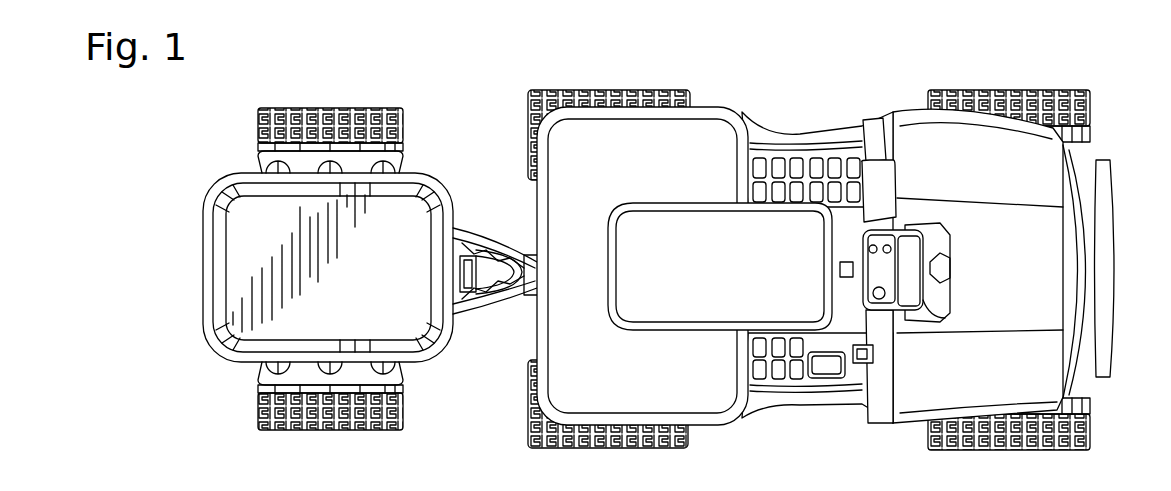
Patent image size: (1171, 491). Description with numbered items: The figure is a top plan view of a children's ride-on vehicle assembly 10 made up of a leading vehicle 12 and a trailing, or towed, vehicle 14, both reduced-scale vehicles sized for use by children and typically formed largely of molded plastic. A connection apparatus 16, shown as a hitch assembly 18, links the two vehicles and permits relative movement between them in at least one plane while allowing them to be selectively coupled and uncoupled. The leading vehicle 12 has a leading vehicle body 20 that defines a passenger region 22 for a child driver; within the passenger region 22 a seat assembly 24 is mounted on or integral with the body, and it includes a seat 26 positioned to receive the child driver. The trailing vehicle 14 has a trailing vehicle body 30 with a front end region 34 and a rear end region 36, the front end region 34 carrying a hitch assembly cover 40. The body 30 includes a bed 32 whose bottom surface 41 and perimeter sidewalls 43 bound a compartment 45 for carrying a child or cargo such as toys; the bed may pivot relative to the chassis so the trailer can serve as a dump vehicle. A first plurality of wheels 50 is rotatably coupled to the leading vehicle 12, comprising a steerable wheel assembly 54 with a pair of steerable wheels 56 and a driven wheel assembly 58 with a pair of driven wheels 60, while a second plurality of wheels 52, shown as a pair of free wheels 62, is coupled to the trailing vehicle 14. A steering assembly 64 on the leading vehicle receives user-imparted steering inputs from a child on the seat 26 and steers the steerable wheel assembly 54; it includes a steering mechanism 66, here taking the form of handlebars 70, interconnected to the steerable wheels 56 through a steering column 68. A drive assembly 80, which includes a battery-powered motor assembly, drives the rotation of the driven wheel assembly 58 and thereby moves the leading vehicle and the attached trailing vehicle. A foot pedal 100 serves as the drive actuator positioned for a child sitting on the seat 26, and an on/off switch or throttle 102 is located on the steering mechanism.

The children's ride-on vehicle assembly 10 is at (441, 80).
The leading vehicle 12 is at (829, 87).
The trailing vehicle 14 is at (205, 149).
The connection apparatus 16 is at (489, 179).
The hitch assembly 18 is at (527, 301).
The leading vehicle body 20 is at (718, 106).
The passenger region 22 is at (723, 172).
The seat assembly 24 is at (746, 197).
The seat 26 is at (712, 293).
The trailing vehicle body 30 is at (191, 270).
The bed 32 is at (204, 216).
The front end region 34 is at (463, 204).
The rear end region 36 is at (187, 300).
The hitch assembly cover 40 is at (525, 254).
The bottom surface 41 is at (372, 283).
The sidewalls 43 is at (427, 278).
The compartment 45 is at (262, 330).
The first plurality of wheels 50 is at (912, 448).
The second plurality of wheels 52 is at (278, 103).
The steerable wheel assembly 54 is at (1046, 92).
The steerable wheel 56 is at (1090, 125).
The driven wheel assembly 58 is at (546, 93).
The driven wheel 60 is at (648, 92).
The free wheels 62 is at (343, 115).
The steering assembly 64 is at (936, 232).
The steering mechanism 66 is at (861, 247).
The steering column 68 is at (955, 270).
The handlebars 70 is at (910, 306).
The drive assembly 80 is at (843, 127).
The foot pedal 100 is at (830, 372).
The on/off switch or throttle 102 is at (874, 353).